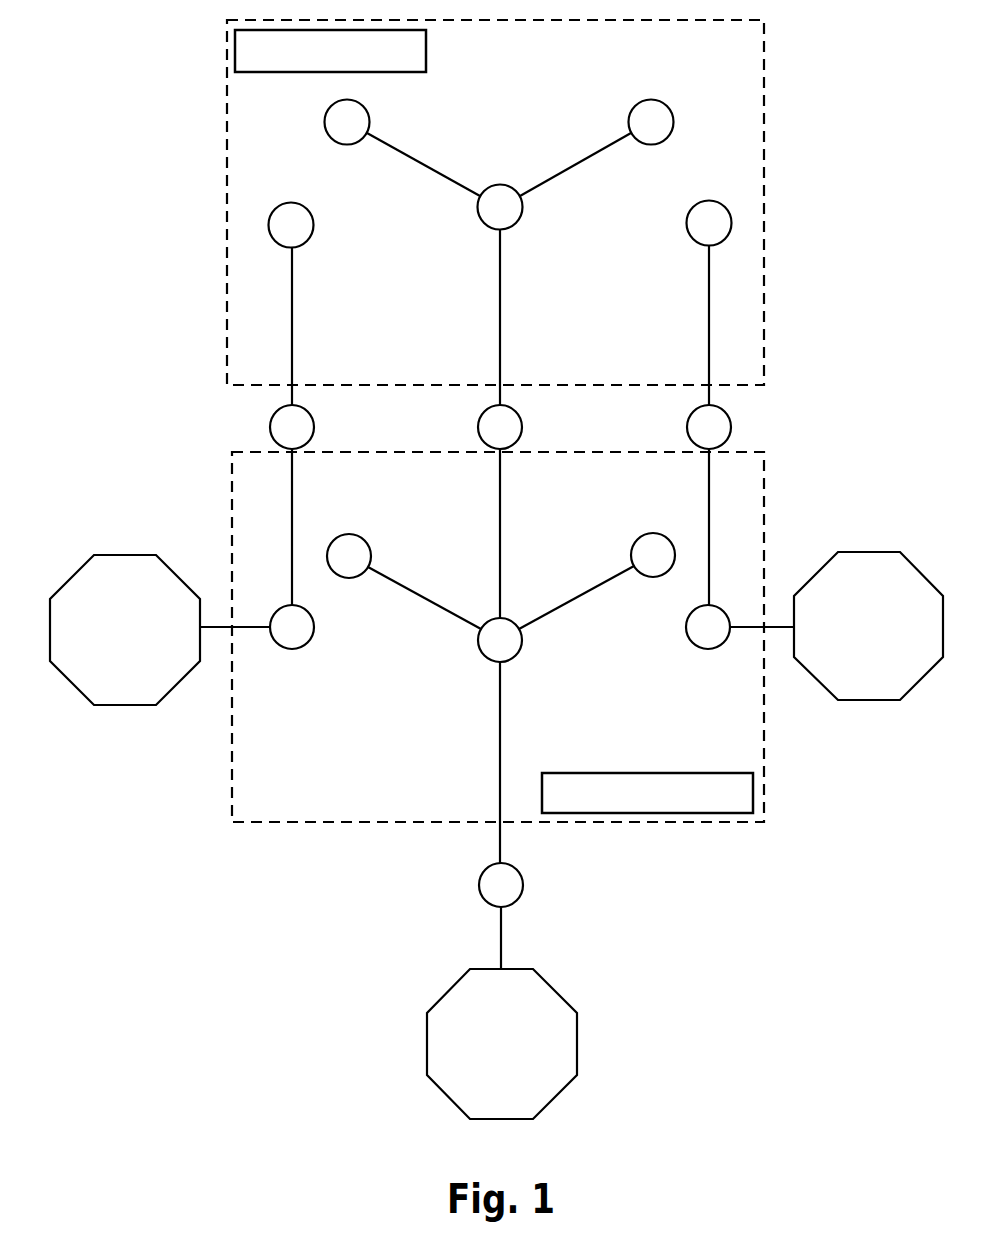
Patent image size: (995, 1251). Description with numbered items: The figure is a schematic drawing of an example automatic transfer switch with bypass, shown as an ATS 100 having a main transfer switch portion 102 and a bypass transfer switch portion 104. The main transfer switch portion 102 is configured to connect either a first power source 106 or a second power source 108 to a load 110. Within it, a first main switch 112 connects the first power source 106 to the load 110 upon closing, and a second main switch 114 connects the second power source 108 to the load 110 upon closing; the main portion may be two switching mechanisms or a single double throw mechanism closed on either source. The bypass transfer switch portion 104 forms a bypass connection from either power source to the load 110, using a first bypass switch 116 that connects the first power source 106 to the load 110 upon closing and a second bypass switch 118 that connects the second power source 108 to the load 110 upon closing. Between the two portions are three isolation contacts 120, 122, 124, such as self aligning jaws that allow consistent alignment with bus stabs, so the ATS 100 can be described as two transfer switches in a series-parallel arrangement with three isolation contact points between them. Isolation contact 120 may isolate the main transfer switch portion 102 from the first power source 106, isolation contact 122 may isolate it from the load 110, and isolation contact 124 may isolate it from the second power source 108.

The ATS 100 is at (825, 86).
The main transfer switch portion 102 is at (228, 223).
The bypass transfer switch portion 104 is at (232, 772).
The first power source 106 is at (124, 706).
The second power source 108 is at (868, 701).
The load 110 is at (577, 1033).
The first main switch 112 is at (412, 148).
The second main switch 114 is at (573, 154).
The first bypass switch 116 is at (412, 582).
The second bypass switch 118 is at (588, 589).
The isolation contact 120 is at (314, 426).
The isolation contact 122 is at (522, 426).
The isolation contact 124 is at (731, 426).